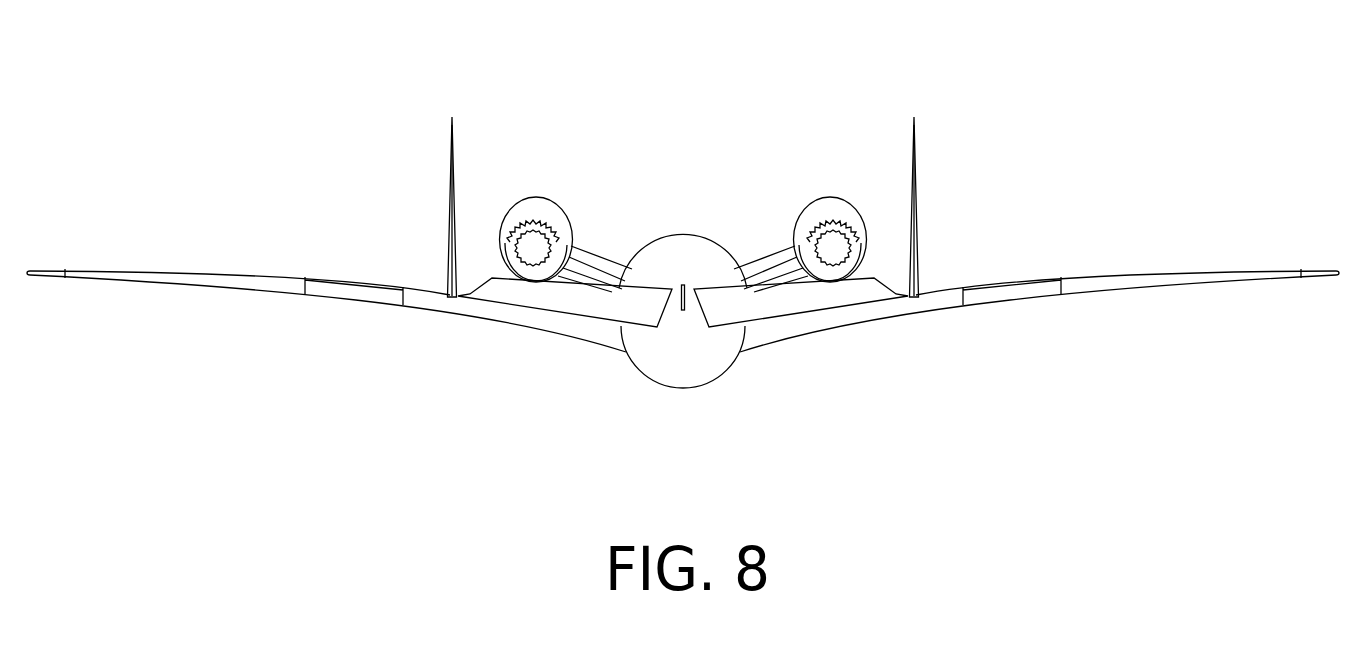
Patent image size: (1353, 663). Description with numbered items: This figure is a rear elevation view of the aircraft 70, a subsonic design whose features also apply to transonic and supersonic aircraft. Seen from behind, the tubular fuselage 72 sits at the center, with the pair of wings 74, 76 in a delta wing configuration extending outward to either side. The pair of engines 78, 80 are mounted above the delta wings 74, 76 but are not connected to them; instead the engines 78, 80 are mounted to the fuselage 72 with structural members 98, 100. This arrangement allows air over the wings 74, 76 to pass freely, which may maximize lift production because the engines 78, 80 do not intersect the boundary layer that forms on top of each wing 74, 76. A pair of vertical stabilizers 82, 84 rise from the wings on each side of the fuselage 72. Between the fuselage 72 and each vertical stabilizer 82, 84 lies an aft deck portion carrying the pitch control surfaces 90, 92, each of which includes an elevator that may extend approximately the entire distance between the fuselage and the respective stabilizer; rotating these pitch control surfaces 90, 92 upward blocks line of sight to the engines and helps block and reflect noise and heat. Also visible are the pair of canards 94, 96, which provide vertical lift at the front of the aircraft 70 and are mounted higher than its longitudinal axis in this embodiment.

The aircraft 70 is at (752, 80).
The tubular fuselage 72 is at (704, 264).
The wing 74 is at (252, 272).
The wing 76 is at (1114, 272).
The engine 78 is at (533, 197).
The engine 80 is at (832, 195).
The vertical stabilizer 82 is at (447, 172).
The vertical stabilizer 84 is at (918, 172).
The pitch control surface 90 is at (641, 318).
The pitch control surface 92 is at (753, 318).
The canard 94 is at (580, 246).
The canard 96 is at (784, 247).
The structural member 98 is at (598, 275).
The structural member 100 is at (769, 272).